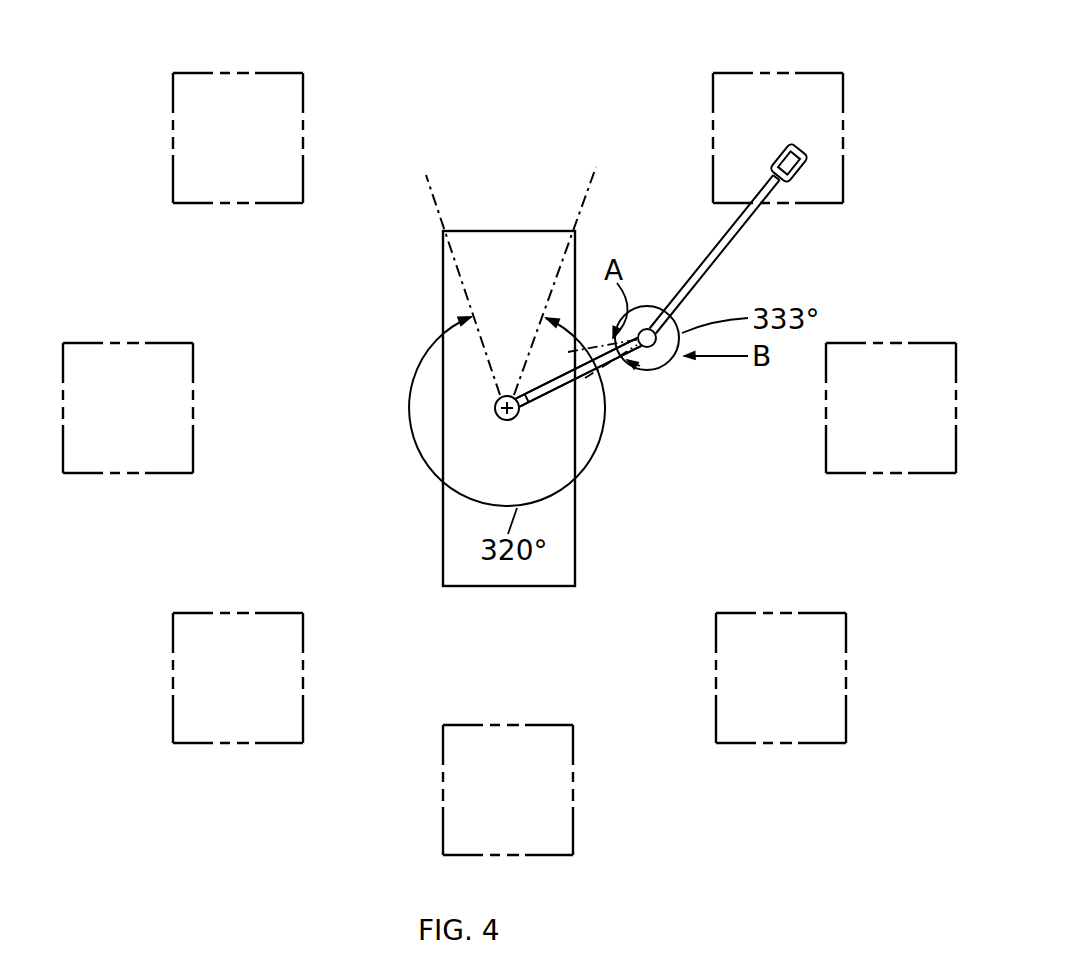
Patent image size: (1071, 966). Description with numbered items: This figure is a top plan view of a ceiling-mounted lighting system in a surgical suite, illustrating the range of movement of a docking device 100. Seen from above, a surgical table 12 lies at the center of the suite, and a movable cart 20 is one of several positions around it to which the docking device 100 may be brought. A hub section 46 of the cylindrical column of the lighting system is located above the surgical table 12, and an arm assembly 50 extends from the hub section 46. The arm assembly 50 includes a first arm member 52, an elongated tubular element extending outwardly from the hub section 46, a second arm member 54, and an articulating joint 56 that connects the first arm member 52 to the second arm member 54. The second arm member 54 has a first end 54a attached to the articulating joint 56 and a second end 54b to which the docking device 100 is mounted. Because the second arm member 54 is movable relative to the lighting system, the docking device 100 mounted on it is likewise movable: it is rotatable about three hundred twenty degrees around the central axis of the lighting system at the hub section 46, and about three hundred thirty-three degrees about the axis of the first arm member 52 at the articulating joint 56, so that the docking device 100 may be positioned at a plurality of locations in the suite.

The surgical table 12 is at (485, 578).
The movable cart 20 is at (758, 72).
The hub section 46 is at (501, 422).
The arm assembly 50 is at (623, 403).
The first arm member 52 is at (553, 397).
The second arm member 54 is at (747, 237).
The first end 54a is at (650, 306).
The second end 54b is at (776, 190).
The articulating joint 56 is at (657, 358).
The docking device 100 is at (808, 166).